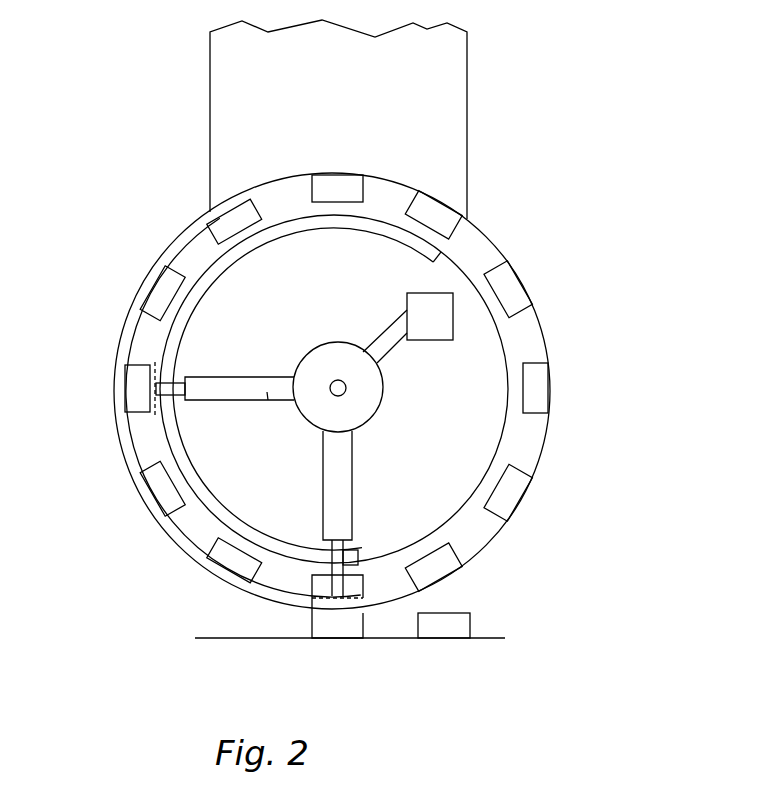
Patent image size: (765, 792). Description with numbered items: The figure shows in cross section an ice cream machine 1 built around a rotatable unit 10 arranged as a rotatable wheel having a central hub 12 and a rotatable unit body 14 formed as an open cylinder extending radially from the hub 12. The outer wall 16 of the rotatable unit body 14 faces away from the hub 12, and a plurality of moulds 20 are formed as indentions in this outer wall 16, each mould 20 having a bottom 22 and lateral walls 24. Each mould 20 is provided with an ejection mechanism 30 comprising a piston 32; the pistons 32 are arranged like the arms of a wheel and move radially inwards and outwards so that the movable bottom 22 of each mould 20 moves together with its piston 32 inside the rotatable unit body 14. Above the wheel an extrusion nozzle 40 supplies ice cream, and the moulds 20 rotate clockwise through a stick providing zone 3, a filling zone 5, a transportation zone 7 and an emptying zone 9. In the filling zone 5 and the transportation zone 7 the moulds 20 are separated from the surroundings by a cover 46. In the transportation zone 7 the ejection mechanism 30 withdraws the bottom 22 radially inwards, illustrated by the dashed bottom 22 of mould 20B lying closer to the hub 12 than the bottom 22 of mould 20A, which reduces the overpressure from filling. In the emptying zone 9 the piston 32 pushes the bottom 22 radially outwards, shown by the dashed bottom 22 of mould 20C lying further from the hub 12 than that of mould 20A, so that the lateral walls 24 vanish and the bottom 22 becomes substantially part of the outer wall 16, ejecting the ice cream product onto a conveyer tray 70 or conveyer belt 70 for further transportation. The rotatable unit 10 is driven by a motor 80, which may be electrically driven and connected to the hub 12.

The ice cream machine 1 is at (566, 180).
The stick providing zone 3 is at (588, 428).
The filling zone 5 is at (307, 165).
The transportation zone 7 is at (106, 472).
The emptying zone 9 is at (306, 620).
The rotatable unit 10 is at (520, 600).
The hub 12 is at (330, 352).
The rotatable unit body 14 is at (193, 248).
The outer wall 16 is at (552, 335).
The mould 20 is at (342, 190).
The mould 20A is at (548, 392).
The mould 20B is at (130, 400).
The mould 20C is at (322, 585).
The bottom 22 is at (498, 295).
The lateral walls 24 is at (500, 272).
The ejection mechanism 30 is at (472, 411).
The piston 32 is at (325, 475).
The extrusion nozzle 40 is at (467, 100).
The cover 46 is at (130, 350).
The conveyer tray 70 is at (385, 640).
The motor 80 is at (412, 300).